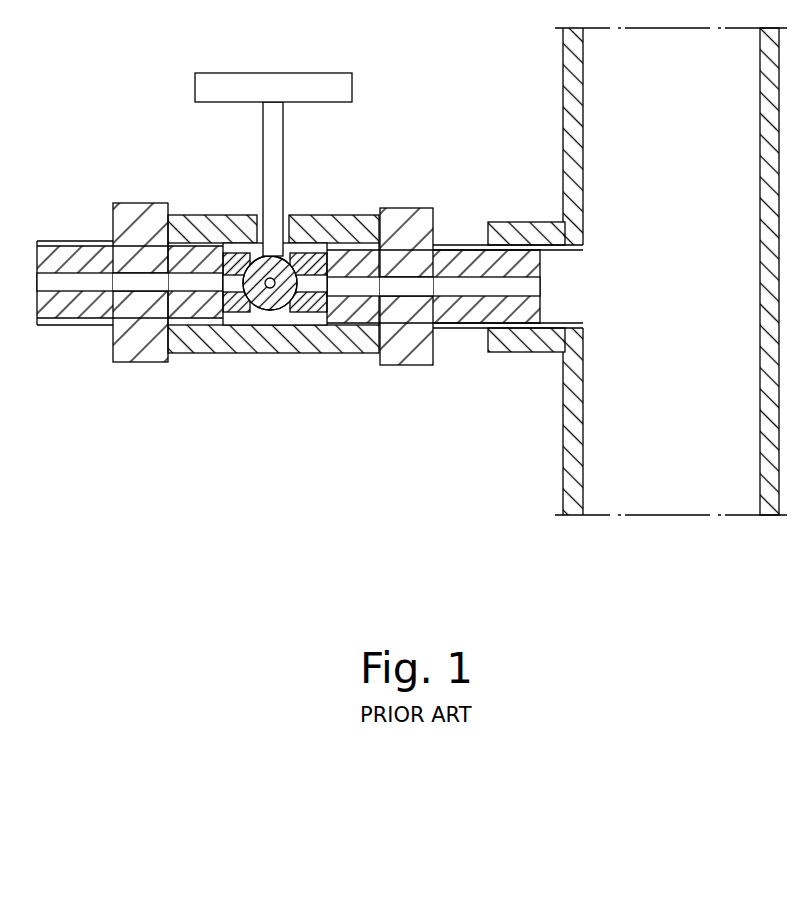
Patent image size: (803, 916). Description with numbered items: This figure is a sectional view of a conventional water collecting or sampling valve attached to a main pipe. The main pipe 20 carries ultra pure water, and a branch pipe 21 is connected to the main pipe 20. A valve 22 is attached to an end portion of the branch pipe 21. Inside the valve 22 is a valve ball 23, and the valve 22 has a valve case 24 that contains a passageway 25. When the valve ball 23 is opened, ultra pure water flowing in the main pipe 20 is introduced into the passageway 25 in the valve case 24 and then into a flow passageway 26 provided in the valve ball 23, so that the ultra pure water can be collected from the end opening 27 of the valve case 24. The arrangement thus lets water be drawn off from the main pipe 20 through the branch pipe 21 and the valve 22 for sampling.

The main pipe 20 is at (568, 105).
The branch pipe 21 is at (513, 342).
The valve 22 is at (240, 353).
The valve ball 23 is at (284, 310).
The valve case 24 is at (141, 217).
The passageway 25 is at (466, 290).
The flow passageway 26 is at (258, 254).
The end opening 27 is at (46, 278).